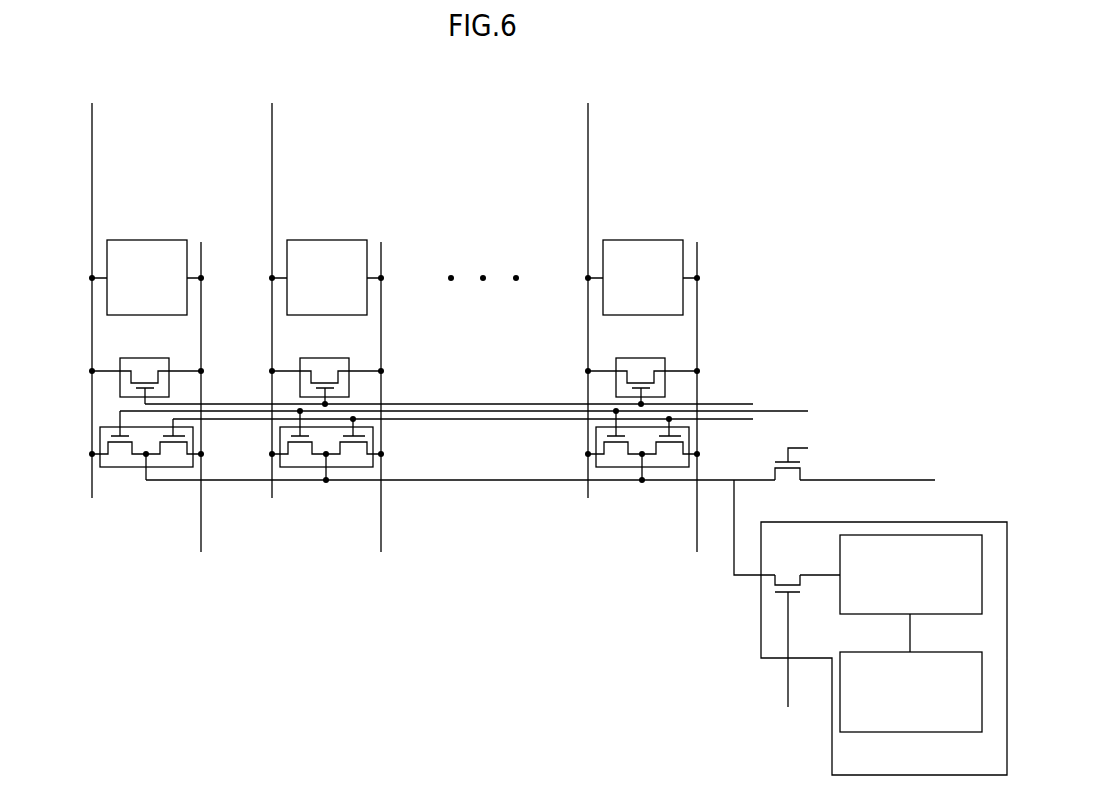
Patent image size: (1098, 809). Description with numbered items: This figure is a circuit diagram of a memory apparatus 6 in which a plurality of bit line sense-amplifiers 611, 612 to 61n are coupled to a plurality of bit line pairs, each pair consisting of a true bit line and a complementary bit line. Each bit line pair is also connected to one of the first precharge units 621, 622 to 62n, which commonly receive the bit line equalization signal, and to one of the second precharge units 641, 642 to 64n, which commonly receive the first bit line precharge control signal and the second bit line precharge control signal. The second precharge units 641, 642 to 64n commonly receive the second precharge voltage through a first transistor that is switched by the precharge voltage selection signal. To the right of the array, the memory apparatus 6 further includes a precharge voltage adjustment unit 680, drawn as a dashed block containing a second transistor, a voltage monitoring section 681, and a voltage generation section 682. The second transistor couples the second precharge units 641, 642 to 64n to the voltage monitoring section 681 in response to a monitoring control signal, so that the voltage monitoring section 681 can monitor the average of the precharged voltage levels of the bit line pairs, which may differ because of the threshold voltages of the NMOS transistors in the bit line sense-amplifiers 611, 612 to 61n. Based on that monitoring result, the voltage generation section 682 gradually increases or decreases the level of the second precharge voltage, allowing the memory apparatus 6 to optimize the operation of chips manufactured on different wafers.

The memory apparatus 6 is at (952, 107).
The bit line sense-amplifier 611 is at (148, 240).
The bit line sense-amplifier 612 is at (328, 240).
The bit line sense-amplifier 61n is at (644, 240).
The first precharge unit 621 is at (137, 358).
The first precharge unit 622 is at (317, 358).
The first precharge unit 62n is at (633, 358).
The second precharge unit 641 is at (103, 466).
The second precharge unit 642 is at (283, 466).
The second precharge unit 64n is at (599, 466).
The precharge voltage adjustment unit 680 is at (910, 648).
The voltage monitoring section 681 is at (960, 614).
The voltage generation section 682 is at (960, 732).